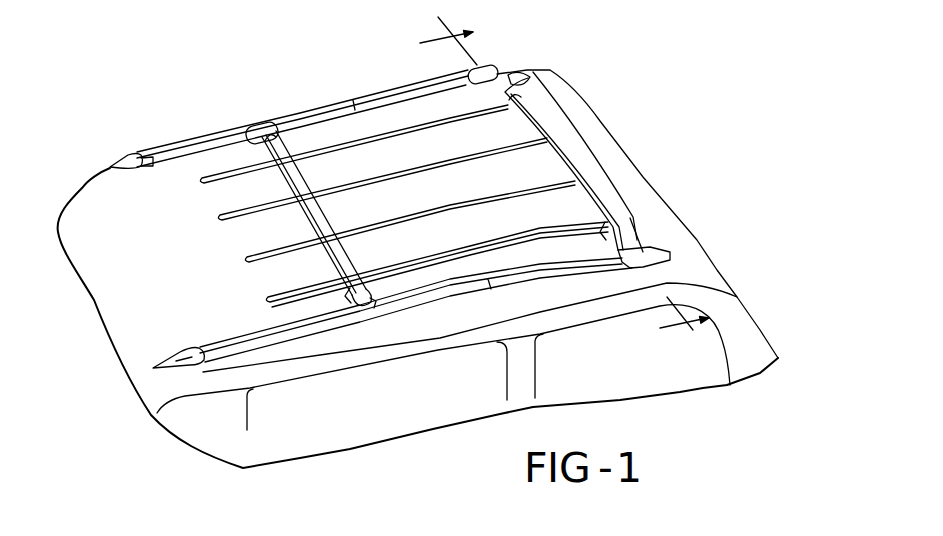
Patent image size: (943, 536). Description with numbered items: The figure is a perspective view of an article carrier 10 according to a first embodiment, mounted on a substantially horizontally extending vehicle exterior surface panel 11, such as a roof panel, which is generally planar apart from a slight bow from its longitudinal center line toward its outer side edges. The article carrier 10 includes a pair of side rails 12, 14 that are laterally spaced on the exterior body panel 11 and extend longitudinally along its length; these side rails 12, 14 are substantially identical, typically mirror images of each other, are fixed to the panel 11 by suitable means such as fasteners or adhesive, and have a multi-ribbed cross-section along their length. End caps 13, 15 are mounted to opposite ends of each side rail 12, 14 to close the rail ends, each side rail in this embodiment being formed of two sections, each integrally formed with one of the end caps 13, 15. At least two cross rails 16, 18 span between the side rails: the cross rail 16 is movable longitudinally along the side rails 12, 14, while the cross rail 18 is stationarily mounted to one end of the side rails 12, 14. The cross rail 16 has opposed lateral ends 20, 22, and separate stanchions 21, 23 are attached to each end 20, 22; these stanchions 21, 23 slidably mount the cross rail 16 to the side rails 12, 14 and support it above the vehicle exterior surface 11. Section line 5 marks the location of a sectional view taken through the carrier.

The section line 5- 5 is at (578, 175).
The article carrier 10 is at (373, 10).
The vehicle exterior surface panel 11 is at (640, 187).
The side rail 12 is at (405, 300).
The end cap 13 is at (520, 80).
The side rail 14 is at (308, 100).
The end cap 15 is at (110, 162).
The cross rail 16 is at (282, 152).
The cross rail 18 is at (567, 150).
The lateral end 20 is at (612, 225).
The stanchion 21 is at (636, 236).
The lateral end 22 is at (268, 133).
The stanchion 23 is at (256, 123).